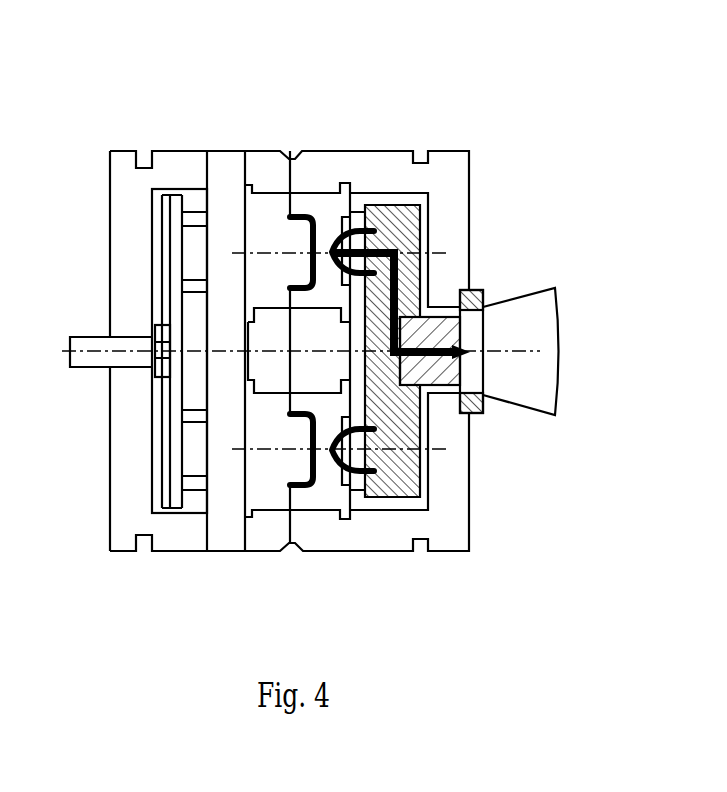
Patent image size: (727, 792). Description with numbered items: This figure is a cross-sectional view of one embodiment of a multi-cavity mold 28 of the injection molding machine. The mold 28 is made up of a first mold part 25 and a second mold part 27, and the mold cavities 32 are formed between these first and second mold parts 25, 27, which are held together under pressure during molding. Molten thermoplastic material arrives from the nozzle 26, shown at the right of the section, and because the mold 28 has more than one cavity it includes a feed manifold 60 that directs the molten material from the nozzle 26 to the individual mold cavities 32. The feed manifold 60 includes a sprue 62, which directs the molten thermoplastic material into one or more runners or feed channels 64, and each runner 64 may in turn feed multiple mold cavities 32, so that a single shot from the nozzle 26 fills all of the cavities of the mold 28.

The first mold part 25 is at (402, 172).
The nozzle 26 is at (507, 333).
The second mold part 27 is at (258, 165).
The mold 28 is at (361, 90).
The mold cavity 32 is at (307, 215).
The feed manifold 60 is at (405, 213).
The sprue 62 is at (486, 302).
The runner or feed channel 64 is at (410, 263).